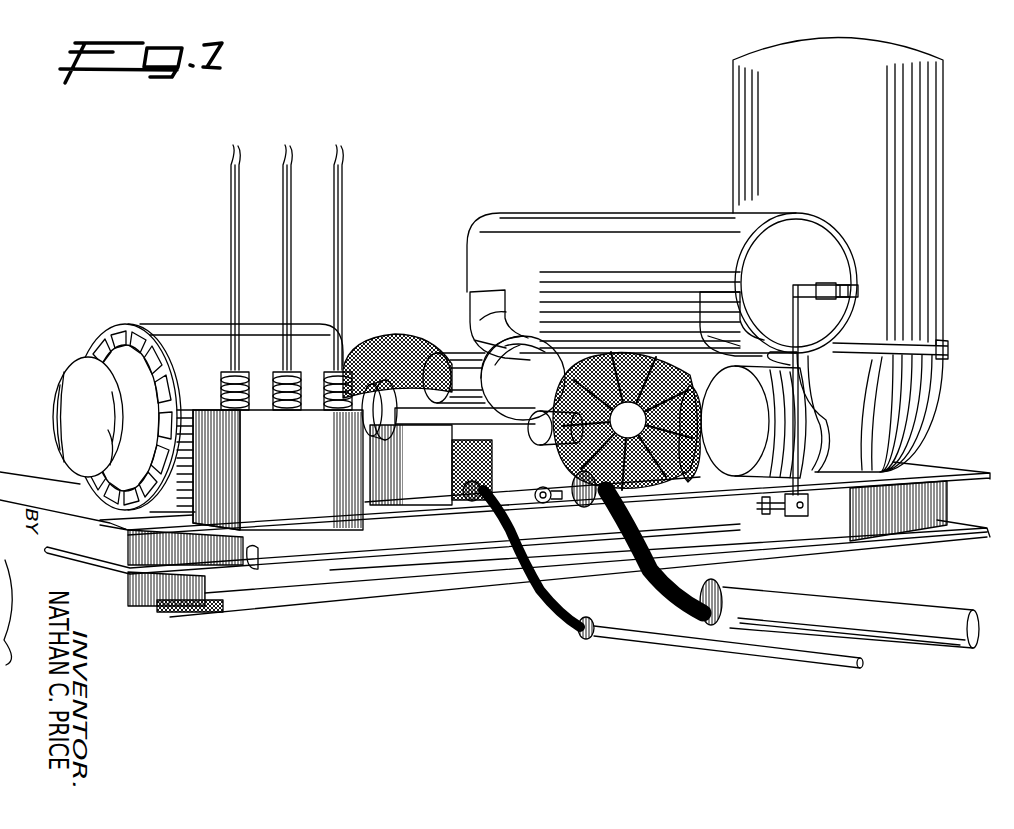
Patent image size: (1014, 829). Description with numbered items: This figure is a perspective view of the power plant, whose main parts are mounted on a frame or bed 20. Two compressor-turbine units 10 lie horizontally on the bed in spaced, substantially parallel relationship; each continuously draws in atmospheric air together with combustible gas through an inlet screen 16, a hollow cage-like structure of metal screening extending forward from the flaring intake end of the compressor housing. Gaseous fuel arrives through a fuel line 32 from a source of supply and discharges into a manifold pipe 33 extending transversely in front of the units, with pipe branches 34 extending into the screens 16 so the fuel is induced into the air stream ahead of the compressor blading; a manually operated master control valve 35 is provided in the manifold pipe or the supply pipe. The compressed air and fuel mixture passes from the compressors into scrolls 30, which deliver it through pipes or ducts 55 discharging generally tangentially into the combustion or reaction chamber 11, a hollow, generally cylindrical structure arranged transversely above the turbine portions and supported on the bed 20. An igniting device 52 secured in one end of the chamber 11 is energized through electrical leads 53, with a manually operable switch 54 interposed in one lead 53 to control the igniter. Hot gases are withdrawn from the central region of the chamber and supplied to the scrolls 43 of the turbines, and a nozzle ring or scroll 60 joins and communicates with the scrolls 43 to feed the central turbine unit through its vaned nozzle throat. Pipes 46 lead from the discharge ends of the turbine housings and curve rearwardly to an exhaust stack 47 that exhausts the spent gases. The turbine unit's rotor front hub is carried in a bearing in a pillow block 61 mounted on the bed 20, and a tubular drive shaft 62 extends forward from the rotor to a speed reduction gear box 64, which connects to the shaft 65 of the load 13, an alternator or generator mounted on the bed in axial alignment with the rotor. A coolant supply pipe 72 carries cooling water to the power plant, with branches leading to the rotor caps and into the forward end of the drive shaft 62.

The compressor-turbine unit 10 is at (518, 335).
The combustion or reaction chamber 11 is at (612, 198).
The load 13 is at (159, 312).
The inlet screen 16 is at (408, 335).
The frame or bed 20 is at (388, 560).
The scroll 30 is at (538, 356).
The fuel line 32 is at (850, 602).
The manifold pipe 33 is at (500, 472).
The pipe branch 34 is at (545, 446).
The master control valve 35 is at (570, 494).
The scroll 43 is at (812, 425).
The pipe 46 is at (924, 426).
The exhaust stack 47 is at (940, 218).
The igniting device 52 is at (856, 284).
The electrical lead 53 is at (797, 283).
The manually operable switch 54 is at (795, 517).
The pipe or duct 55 is at (462, 344).
The nozzle ring or scroll 60 is at (566, 372).
The pillow block 61 is at (506, 352).
The drive shaft 62 is at (538, 486).
The speed reduction gear box 64 is at (437, 465).
The shaft 65 is at (396, 404).
The coolant supply pipe 72 is at (646, 636).